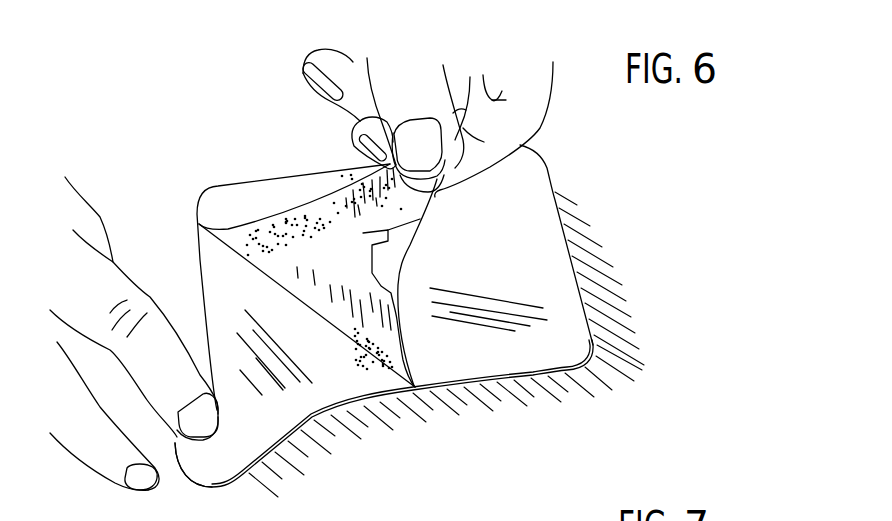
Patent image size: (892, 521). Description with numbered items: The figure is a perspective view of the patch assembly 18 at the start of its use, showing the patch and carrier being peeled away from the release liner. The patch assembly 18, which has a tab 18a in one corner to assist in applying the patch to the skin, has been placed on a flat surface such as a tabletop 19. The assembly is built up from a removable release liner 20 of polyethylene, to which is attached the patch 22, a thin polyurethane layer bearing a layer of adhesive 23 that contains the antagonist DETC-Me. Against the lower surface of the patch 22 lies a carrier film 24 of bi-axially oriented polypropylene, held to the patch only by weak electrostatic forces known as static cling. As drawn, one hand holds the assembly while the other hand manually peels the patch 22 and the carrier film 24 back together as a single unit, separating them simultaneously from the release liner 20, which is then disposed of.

The patch assembly 18 is at (312, 446).
The tab 18a is at (220, 463).
The tabletop 19 is at (607, 290).
The release liner 20 is at (220, 285).
The patch 22 is at (362, 234).
The adhesive 23 is at (273, 238).
The carrier film 24 is at (385, 268).